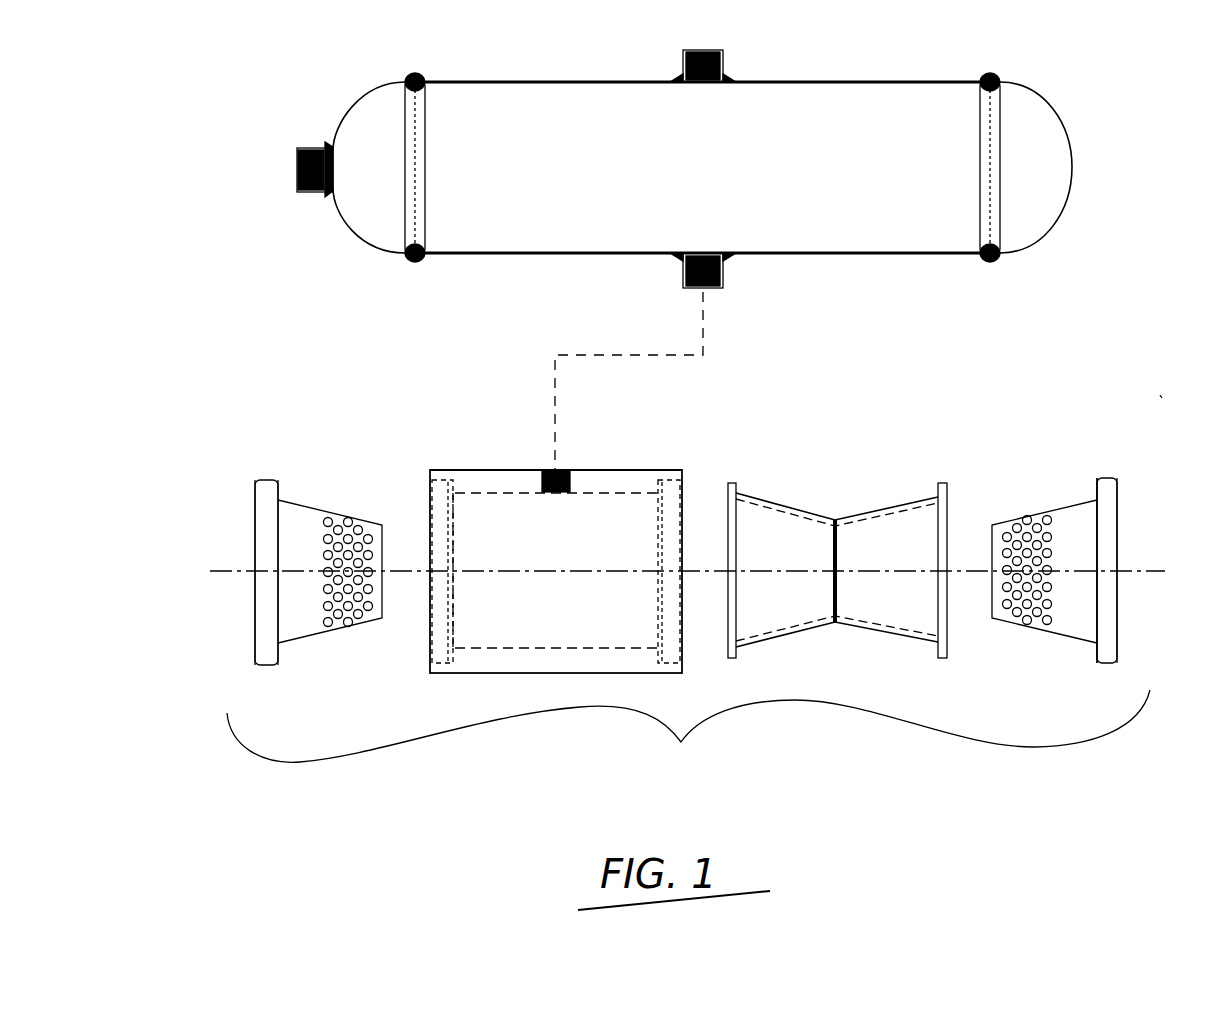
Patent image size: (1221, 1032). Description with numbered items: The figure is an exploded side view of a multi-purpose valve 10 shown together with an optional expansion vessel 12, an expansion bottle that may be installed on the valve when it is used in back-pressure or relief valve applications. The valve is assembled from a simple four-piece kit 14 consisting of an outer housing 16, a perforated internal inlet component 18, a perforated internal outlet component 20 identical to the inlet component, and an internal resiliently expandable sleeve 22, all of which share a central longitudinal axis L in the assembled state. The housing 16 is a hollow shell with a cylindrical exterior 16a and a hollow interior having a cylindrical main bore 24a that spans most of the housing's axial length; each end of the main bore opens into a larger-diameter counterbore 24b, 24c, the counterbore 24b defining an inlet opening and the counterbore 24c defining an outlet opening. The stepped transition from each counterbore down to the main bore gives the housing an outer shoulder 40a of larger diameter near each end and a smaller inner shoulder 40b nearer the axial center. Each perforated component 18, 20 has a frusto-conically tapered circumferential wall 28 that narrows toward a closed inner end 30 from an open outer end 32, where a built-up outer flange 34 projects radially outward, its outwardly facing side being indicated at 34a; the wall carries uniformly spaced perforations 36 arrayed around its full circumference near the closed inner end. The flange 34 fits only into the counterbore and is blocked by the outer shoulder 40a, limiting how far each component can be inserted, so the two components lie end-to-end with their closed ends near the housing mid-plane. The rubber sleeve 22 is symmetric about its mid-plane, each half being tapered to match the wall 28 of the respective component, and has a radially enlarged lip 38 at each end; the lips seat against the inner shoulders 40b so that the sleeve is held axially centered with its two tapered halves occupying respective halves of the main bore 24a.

The multi-purpose valve 10 is at (1157, 420).
The expansion vessel 12 is at (1084, 93).
The four-piece kit 14 is at (688, 740).
The outer housing 16 is at (641, 455).
The cylindrical exterior 16a is at (491, 470).
The perforated internal inlet component 18 is at (271, 469).
The perforated internal outlet component 20 is at (1079, 493).
The resiliently expandable sleeve 22 is at (904, 491).
The main bore 24a is at (590, 510).
The inlet counterbore 24b is at (437, 608).
The outlet counterbore 24c is at (673, 625).
The circumferential wall 28 is at (300, 530).
The closed inner end 30 is at (383, 548).
The open outer end 32 is at (255, 642).
The outer flange 34 is at (278, 498).
The flange face 34a is at (278, 658).
The perforations 36 is at (358, 525).
The enlarged lip 38 is at (736, 490).
The outer shoulder 40a is at (432, 481).
The inner shoulder 40b is at (435, 650).
The longitudinal axis L is at (1142, 580).